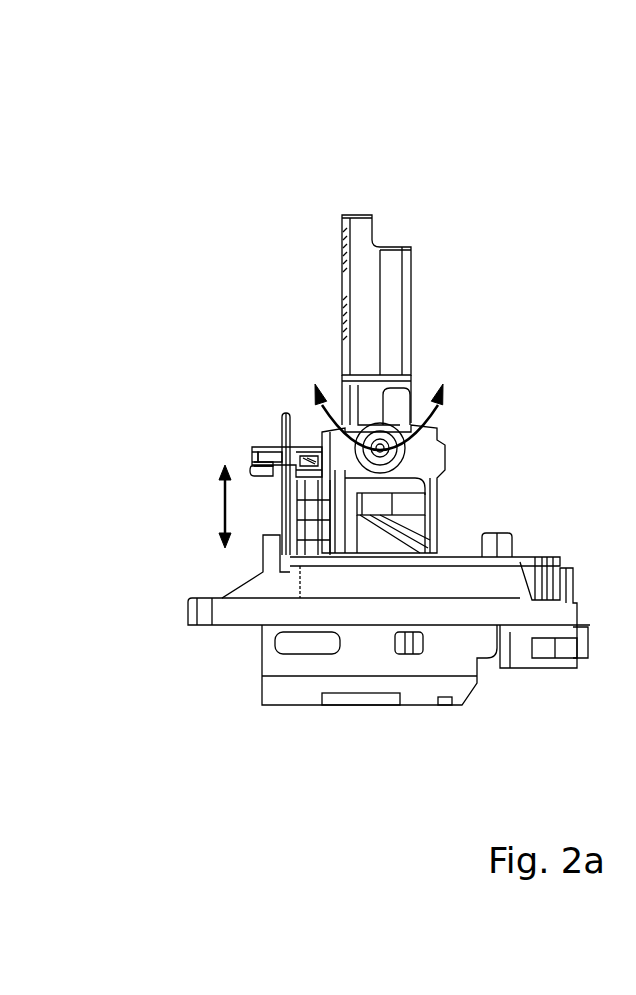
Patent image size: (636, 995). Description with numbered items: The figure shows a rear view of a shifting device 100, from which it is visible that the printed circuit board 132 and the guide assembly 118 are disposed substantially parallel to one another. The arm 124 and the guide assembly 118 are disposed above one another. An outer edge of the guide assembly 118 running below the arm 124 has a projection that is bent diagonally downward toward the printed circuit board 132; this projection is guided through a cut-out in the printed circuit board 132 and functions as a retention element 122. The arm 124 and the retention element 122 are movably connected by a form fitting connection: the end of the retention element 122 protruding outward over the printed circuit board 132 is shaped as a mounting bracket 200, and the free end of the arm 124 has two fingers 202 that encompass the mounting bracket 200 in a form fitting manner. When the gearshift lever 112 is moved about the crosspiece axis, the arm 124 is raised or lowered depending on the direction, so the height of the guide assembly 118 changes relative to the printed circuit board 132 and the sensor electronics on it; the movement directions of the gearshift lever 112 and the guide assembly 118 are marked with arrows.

The shifting device 100 is at (262, 230).
The gearshift lever 112 is at (411, 295).
The guide assembly 118 is at (296, 445).
The printed circuit board 132 is at (283, 440).
The arm 124 is at (270, 447).
The fingers 202 is at (252, 450).
The mounting bracket 200 is at (255, 460).
The retention element 122 is at (278, 470).